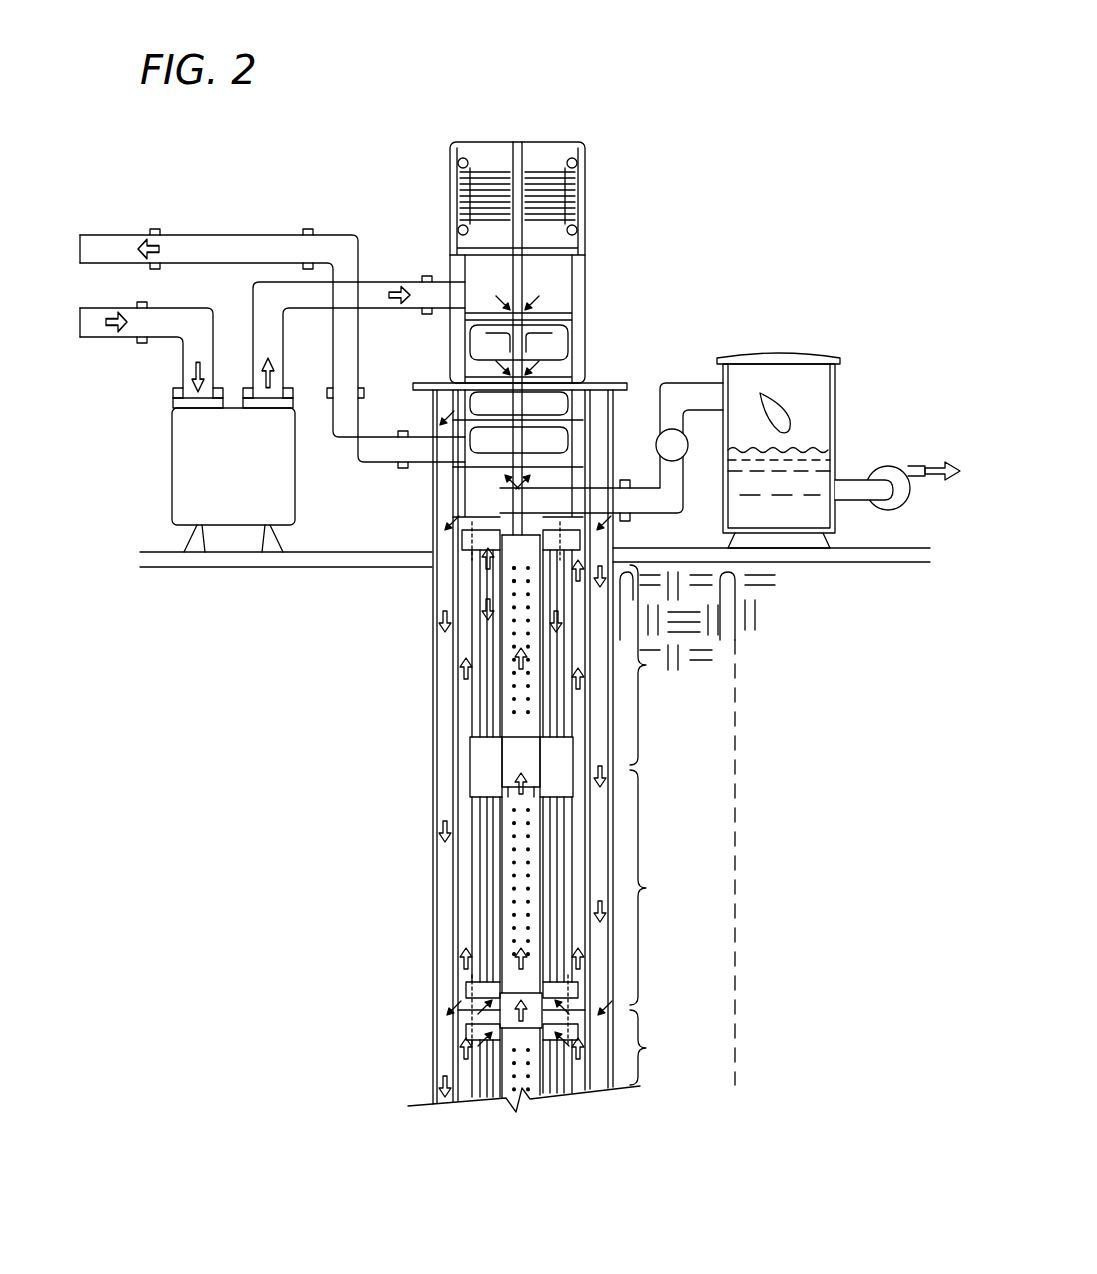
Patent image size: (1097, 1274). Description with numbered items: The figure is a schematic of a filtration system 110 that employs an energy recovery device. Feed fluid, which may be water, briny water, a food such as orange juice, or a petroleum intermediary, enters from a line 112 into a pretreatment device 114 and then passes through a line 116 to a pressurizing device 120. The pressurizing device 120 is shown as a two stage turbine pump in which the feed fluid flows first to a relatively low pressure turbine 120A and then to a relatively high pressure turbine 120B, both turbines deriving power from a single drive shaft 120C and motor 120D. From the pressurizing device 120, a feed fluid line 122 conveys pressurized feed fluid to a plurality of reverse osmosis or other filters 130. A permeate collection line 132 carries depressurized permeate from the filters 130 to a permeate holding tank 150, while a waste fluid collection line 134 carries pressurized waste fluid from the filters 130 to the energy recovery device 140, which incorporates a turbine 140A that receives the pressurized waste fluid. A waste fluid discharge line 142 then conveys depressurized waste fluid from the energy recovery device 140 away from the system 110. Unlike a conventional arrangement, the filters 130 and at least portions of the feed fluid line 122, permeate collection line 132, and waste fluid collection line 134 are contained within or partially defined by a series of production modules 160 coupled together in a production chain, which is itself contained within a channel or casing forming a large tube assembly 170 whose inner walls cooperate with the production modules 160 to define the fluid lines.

The filtration system 110 is at (713, 135).
The line 112 is at (103, 340).
The pretreatment device 114 is at (228, 517).
The line 116 is at (386, 282).
The pressurizing device 120 is at (541, 298).
The low pressure turbine 120A is at (480, 343).
The high pressure turbine 120B is at (543, 403).
The drive shaft 120C is at (523, 160).
The motor 120D is at (453, 183).
The feed fluid line 122 is at (440, 650).
The filters 130 is at (452, 816).
The permeate collection line 132 is at (520, 690).
The waste fluid collection line 134 is at (463, 757).
The energy recovery device 140 is at (618, 437).
The turbine 140A is at (490, 437).
The waste fluid discharge line 142 is at (357, 472).
The holding tank 150 is at (825, 355).
The production modules 160 is at (660, 825).
The tube assembly 170 is at (738, 795).